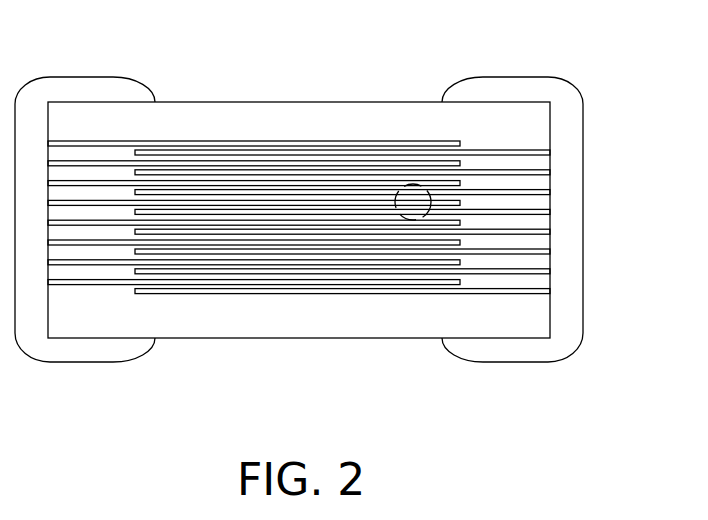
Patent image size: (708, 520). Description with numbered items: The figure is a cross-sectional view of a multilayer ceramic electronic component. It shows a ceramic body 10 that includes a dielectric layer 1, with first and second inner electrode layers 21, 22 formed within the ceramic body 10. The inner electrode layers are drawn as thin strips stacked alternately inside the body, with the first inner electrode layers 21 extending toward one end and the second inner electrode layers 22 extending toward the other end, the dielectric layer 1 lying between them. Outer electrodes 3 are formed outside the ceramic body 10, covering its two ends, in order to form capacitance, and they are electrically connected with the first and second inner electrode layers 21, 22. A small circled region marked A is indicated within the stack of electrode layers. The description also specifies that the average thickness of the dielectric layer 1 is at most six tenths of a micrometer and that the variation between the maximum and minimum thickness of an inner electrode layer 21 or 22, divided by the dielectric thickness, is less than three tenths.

The dielectric layer 1 is at (538, 205).
The outer electrode 3 is at (72, 349).
The ceramic body 10 is at (303, 338).
The first inner electrode layer 21 is at (478, 193).
The second inner electrode layer 22 is at (455, 203).
The enlarged region A is at (401, 172).